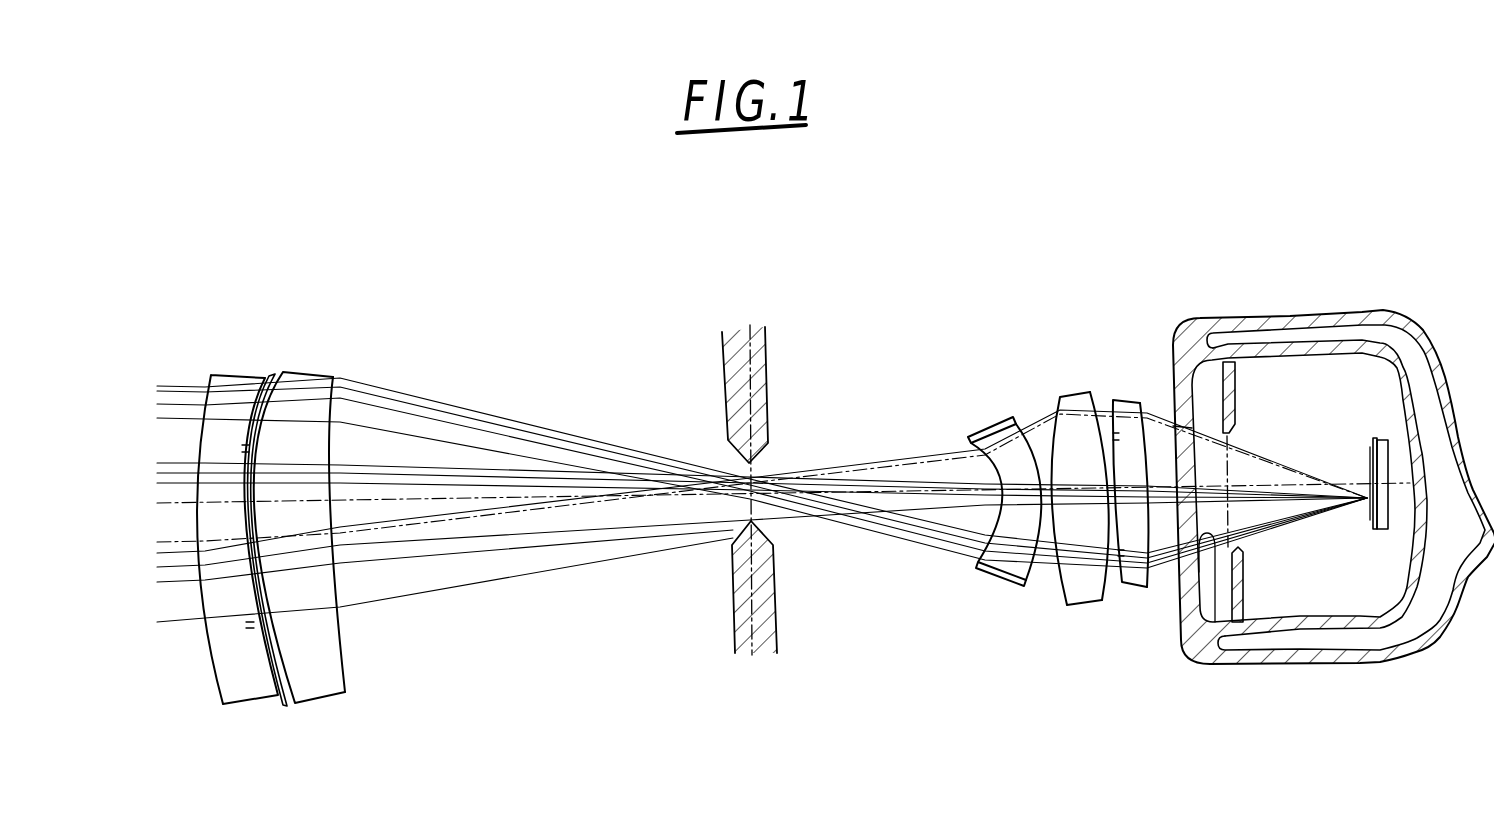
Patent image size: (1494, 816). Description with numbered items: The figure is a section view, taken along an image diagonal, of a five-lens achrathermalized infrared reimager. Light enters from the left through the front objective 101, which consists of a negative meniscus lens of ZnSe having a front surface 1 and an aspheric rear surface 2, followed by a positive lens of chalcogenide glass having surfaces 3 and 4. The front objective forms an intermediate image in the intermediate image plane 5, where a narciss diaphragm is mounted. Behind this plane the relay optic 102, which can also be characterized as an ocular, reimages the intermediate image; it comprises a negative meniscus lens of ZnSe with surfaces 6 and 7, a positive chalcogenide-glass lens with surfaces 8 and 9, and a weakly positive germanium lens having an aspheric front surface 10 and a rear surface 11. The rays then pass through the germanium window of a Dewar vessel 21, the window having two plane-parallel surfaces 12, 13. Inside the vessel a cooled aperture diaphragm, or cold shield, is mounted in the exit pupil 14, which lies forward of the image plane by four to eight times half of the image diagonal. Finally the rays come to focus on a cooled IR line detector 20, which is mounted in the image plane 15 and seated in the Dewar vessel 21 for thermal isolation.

The front surface of negative meniscus lens 1 is at (222, 700).
The rear surface of negative meniscus lens 2 is at (280, 692).
The front surface of positive lens 3 is at (290, 700).
The rear surface of positive lens 4 is at (346, 691).
The intermediate image plane 5 is at (777, 623).
The front surface of relay negative meniscus lens 6 is at (979, 562).
The rear surface of relay negative meniscus lens 7 is at (1028, 586).
The front surface of relay positive lens 8 is at (1064, 600).
The rear surface of relay positive lens 9 is at (1104, 601).
The aspheric front surface of germanium lens 10 is at (1118, 584).
The rear surface of germanium lens 11 is at (1154, 588).
The plane-parallel window surface 12 is at (1172, 445).
The plane-parallel window surface 13 is at (1212, 665).
The exit pupil 14 is at (1241, 600).
The image plane 15 is at (1367, 512).
The IR line detector 20 is at (1373, 441).
The Dewar vessel 21 is at (1303, 309).
The front objective 101 is at (209, 358).
The relay optic 102 is at (955, 390).